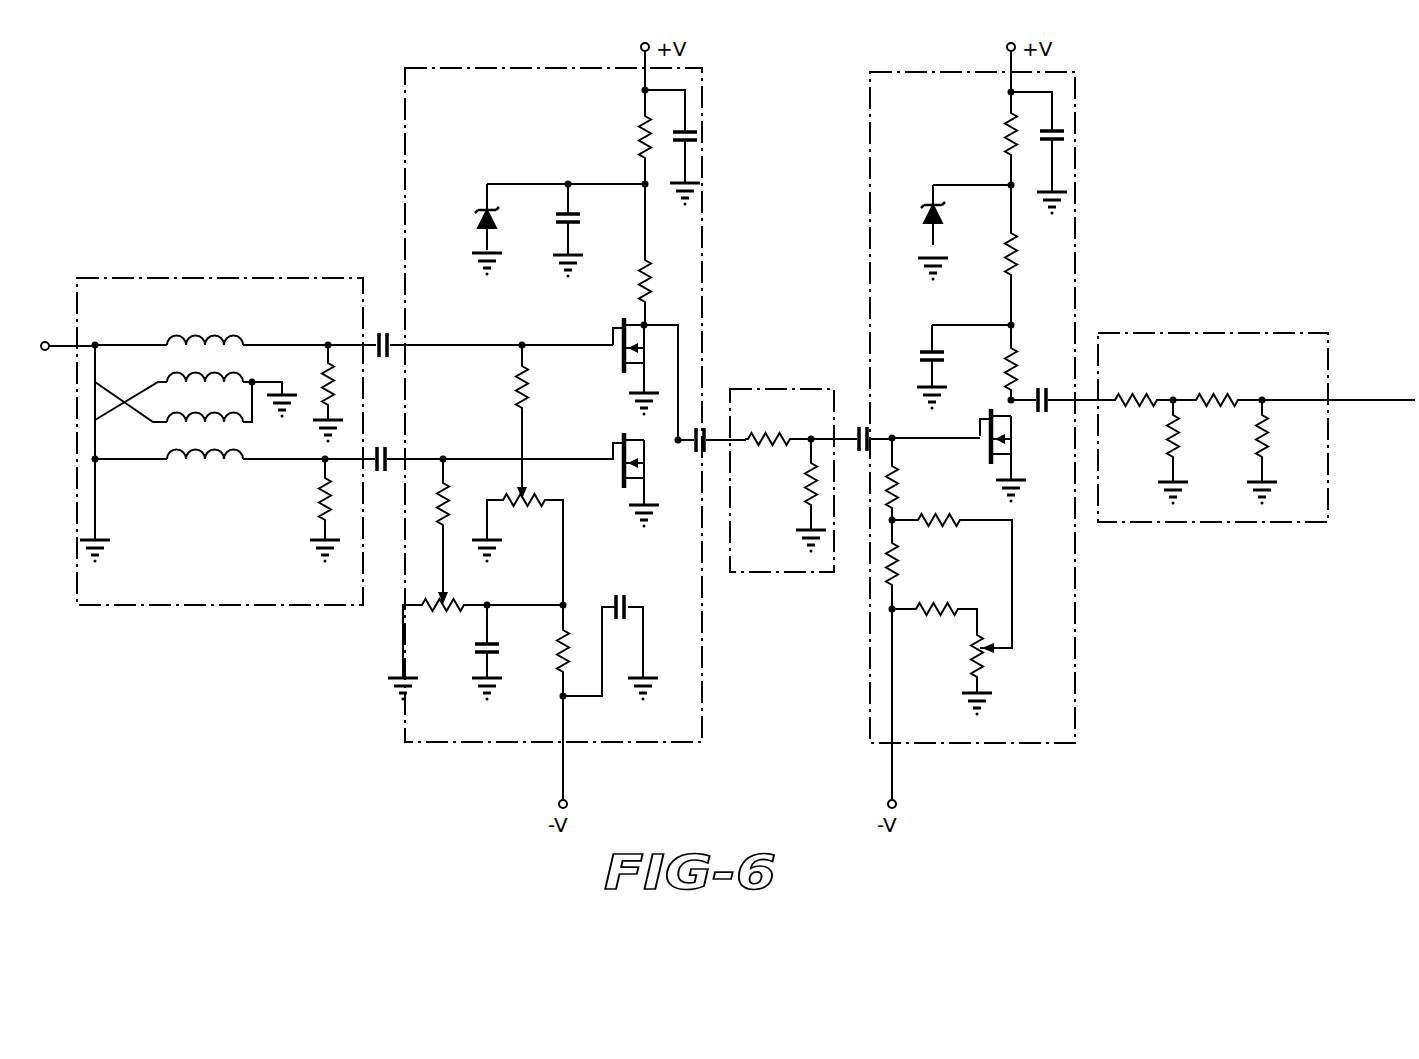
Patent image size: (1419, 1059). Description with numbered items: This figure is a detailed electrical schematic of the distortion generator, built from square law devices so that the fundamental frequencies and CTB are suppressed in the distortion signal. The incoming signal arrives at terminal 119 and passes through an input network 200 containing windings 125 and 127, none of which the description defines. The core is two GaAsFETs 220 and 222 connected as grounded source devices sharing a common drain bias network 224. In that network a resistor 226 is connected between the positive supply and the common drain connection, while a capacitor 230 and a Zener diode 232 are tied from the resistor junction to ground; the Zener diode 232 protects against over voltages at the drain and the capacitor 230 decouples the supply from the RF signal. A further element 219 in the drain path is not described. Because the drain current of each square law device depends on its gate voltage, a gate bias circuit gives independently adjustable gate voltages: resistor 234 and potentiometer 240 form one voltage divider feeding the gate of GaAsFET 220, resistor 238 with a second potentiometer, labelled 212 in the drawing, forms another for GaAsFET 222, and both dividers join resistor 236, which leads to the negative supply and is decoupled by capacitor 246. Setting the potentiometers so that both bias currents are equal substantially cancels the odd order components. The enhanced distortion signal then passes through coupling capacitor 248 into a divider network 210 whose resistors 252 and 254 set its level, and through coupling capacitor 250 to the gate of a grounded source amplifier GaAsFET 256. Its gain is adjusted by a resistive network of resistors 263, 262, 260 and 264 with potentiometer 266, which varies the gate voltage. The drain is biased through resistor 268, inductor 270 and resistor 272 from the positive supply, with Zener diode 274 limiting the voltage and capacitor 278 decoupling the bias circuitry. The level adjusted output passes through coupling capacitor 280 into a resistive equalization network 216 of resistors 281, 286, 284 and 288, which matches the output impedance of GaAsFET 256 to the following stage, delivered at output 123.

The input terminal 119 is at (62, 320).
The input transformer network 200 is at (283, 278).
The primary winding 125 is at (250, 312).
The secondary winding 127 is at (218, 462).
The common drain bias network 224 is at (494, 68).
The resistor 226 is at (642, 120).
The Zener diode 232 is at (480, 217).
The capacitor 230 is at (578, 218).
The drain load resistor 219 is at (642, 262).
The GaAsFET 220 is at (620, 357).
The GaAsFET 222 is at (614, 470).
The resistor 234 is at (518, 372).
The resistor 238 is at (448, 498).
The potentiometer 240 is at (510, 506).
The potentiometer / second amplifier stage 212 is at (456, 612).
The resistor 236 is at (560, 641).
The capacitor 246 is at (606, 598).
The coupling capacitor 248 is at (704, 454).
The attenuator network 210 is at (758, 366).
The resistor 252 is at (776, 438).
The resistor 254 is at (802, 477).
The coupling capacitor 250 is at (870, 452).
The resistor 272 is at (1009, 122).
The Zener diode 274 is at (926, 207).
The inductor 270 is at (1007, 258).
The capacitor 278 is at (924, 352).
The resistor 268 is at (1008, 357).
The coupling capacitor 280 is at (1038, 394).
The GaAsFET 256 is at (990, 416).
The resistor 263 is at (898, 474).
The resistor 262 is at (916, 514).
The resistor 260 is at (896, 548).
The resistor 264 is at (919, 608).
The potentiometer 266 is at (974, 648).
The output attenuator network 216 is at (1225, 333).
The series resistor 281 is at (1142, 378).
The resistor 286 is at (1220, 378).
The resistor 284 is at (1180, 434).
The resistor 288 is at (1268, 434).
The output terminal 123 is at (1348, 400).